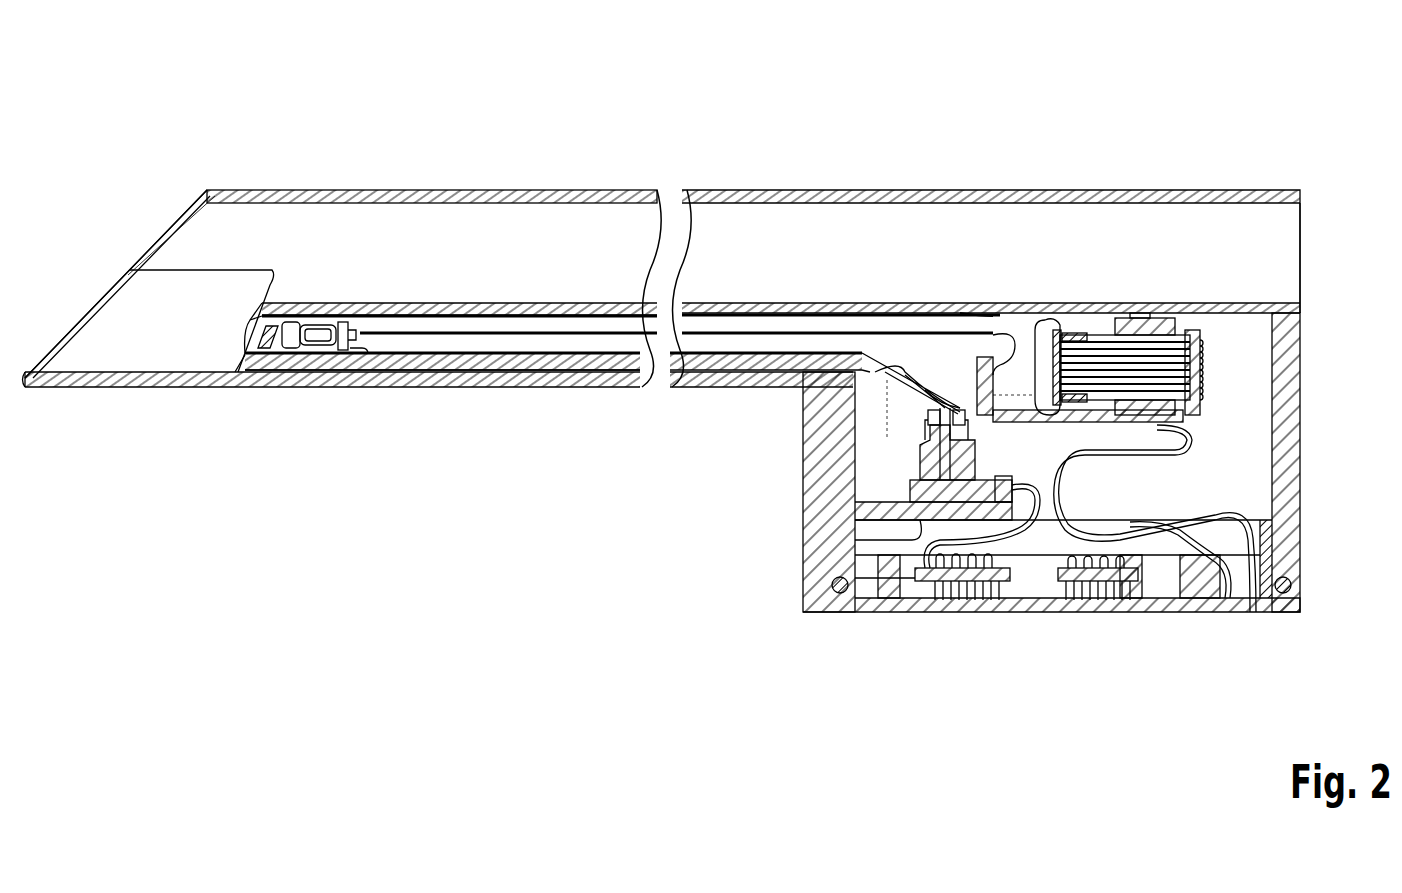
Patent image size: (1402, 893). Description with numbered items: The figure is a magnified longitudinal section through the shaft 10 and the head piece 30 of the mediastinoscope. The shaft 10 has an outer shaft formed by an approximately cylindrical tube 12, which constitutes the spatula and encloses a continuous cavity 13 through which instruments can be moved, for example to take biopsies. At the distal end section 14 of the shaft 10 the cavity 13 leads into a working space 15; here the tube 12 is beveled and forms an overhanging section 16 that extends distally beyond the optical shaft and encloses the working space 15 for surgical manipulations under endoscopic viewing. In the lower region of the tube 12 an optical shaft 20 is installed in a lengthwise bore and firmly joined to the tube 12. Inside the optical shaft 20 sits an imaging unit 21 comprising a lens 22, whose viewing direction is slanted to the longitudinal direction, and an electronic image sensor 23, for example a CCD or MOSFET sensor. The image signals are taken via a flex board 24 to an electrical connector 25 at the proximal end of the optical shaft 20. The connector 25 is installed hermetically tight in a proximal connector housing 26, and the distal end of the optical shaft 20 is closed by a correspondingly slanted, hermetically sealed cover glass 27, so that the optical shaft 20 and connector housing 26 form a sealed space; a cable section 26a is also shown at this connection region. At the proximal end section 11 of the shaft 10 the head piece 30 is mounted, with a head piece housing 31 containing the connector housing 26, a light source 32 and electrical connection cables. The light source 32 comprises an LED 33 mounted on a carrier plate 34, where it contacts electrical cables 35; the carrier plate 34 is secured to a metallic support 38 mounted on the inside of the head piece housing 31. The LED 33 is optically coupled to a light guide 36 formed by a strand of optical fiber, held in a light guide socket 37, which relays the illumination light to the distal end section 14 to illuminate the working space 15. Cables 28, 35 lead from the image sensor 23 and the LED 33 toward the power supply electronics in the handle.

The shaft 10 is at (780, 100).
The proximal end section 11 is at (1030, 168).
The tube 12 is at (537, 200).
The cavity 13 is at (788, 268).
The distal end section 14 is at (325, 168).
The working space 15 is at (180, 338).
The overhanging section 16 is at (130, 388).
The optical shaft 20 is at (420, 356).
The imaging unit 21 is at (283, 352).
The lens 22 is at (293, 328).
The electronic image sensor 23 is at (345, 342).
The flex board 24 is at (1018, 372).
The electrical connector 25 is at (1170, 300).
The connector housing 26 is at (1160, 430).
The cable section 26a is at (980, 312).
The cover glass 27 is at (255, 342).
The cable 28 is at (1110, 462).
The head piece 30 is at (1312, 450).
The head piece housing 31 is at (1286, 344).
The light source 32 is at (896, 424).
The LED 33 is at (925, 488).
The carrier plate 34 is at (920, 498).
The electrical cables 35 is at (912, 546).
The light guide 36 is at (505, 366).
The light guide socket 37 is at (925, 453).
The metallic support 38 is at (915, 515).